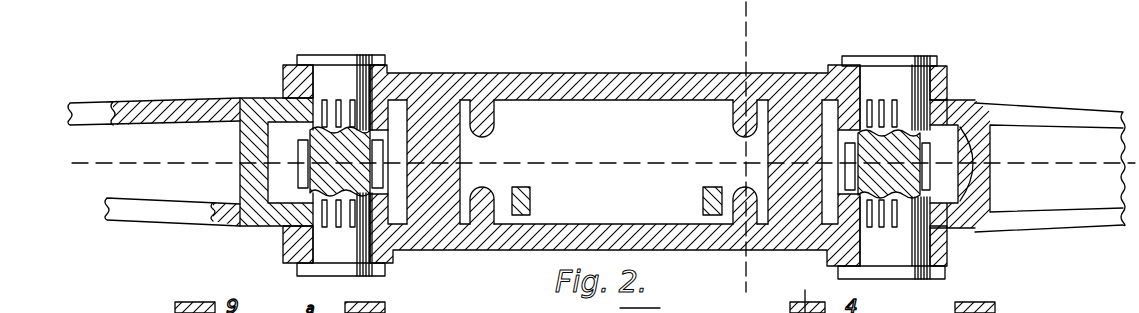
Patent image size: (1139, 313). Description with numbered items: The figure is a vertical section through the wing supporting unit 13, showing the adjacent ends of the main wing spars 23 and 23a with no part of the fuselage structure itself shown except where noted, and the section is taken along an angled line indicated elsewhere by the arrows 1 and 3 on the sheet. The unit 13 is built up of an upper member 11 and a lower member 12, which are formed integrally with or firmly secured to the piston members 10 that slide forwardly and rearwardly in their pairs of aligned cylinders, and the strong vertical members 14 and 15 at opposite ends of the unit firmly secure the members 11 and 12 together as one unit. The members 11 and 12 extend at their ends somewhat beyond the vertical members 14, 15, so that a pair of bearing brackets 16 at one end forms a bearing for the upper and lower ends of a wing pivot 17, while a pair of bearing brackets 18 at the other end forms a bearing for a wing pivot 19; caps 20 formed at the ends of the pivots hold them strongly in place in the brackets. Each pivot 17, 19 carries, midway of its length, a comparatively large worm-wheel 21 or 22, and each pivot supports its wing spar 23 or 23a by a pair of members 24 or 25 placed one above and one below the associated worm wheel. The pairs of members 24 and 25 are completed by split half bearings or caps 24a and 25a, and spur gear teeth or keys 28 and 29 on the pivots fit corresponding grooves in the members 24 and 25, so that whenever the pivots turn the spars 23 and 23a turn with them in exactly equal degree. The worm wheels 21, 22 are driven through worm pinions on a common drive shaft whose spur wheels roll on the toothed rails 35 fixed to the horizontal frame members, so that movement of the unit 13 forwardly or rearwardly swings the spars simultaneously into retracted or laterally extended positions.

The section line 1- 1 is at (118, 178).
The horizontal frame member 3 is at (730, 42).
The piston member 10 is at (497, 133).
The upper member 11 is at (588, 62).
The lower member 12 is at (567, 226).
The wing supporting unit 13 is at (398, 71).
The vertical member 14 is at (462, 152).
The vertical member 15 is at (766, 153).
The bearing bracket 16 is at (286, 66).
The wing pivot 17 is at (328, 78).
The bearing bracket 18 is at (947, 78).
The wing pivot 19 is at (878, 78).
The cap 20 is at (384, 58).
The worm-wheel 21 is at (293, 181).
The worm-wheel 22 is at (938, 165).
The wing spar 23 is at (170, 113).
The wing spar 23a is at (1015, 115).
The member 24 is at (275, 98).
The split half bearing 24a is at (388, 220).
The member 25 is at (941, 102).
The split half bearing 25a is at (808, 184).
The spur gear teeth 28 is at (348, 233).
The spur gear teeth 29 is at (895, 238).
The toothed rail 35 is at (532, 200).